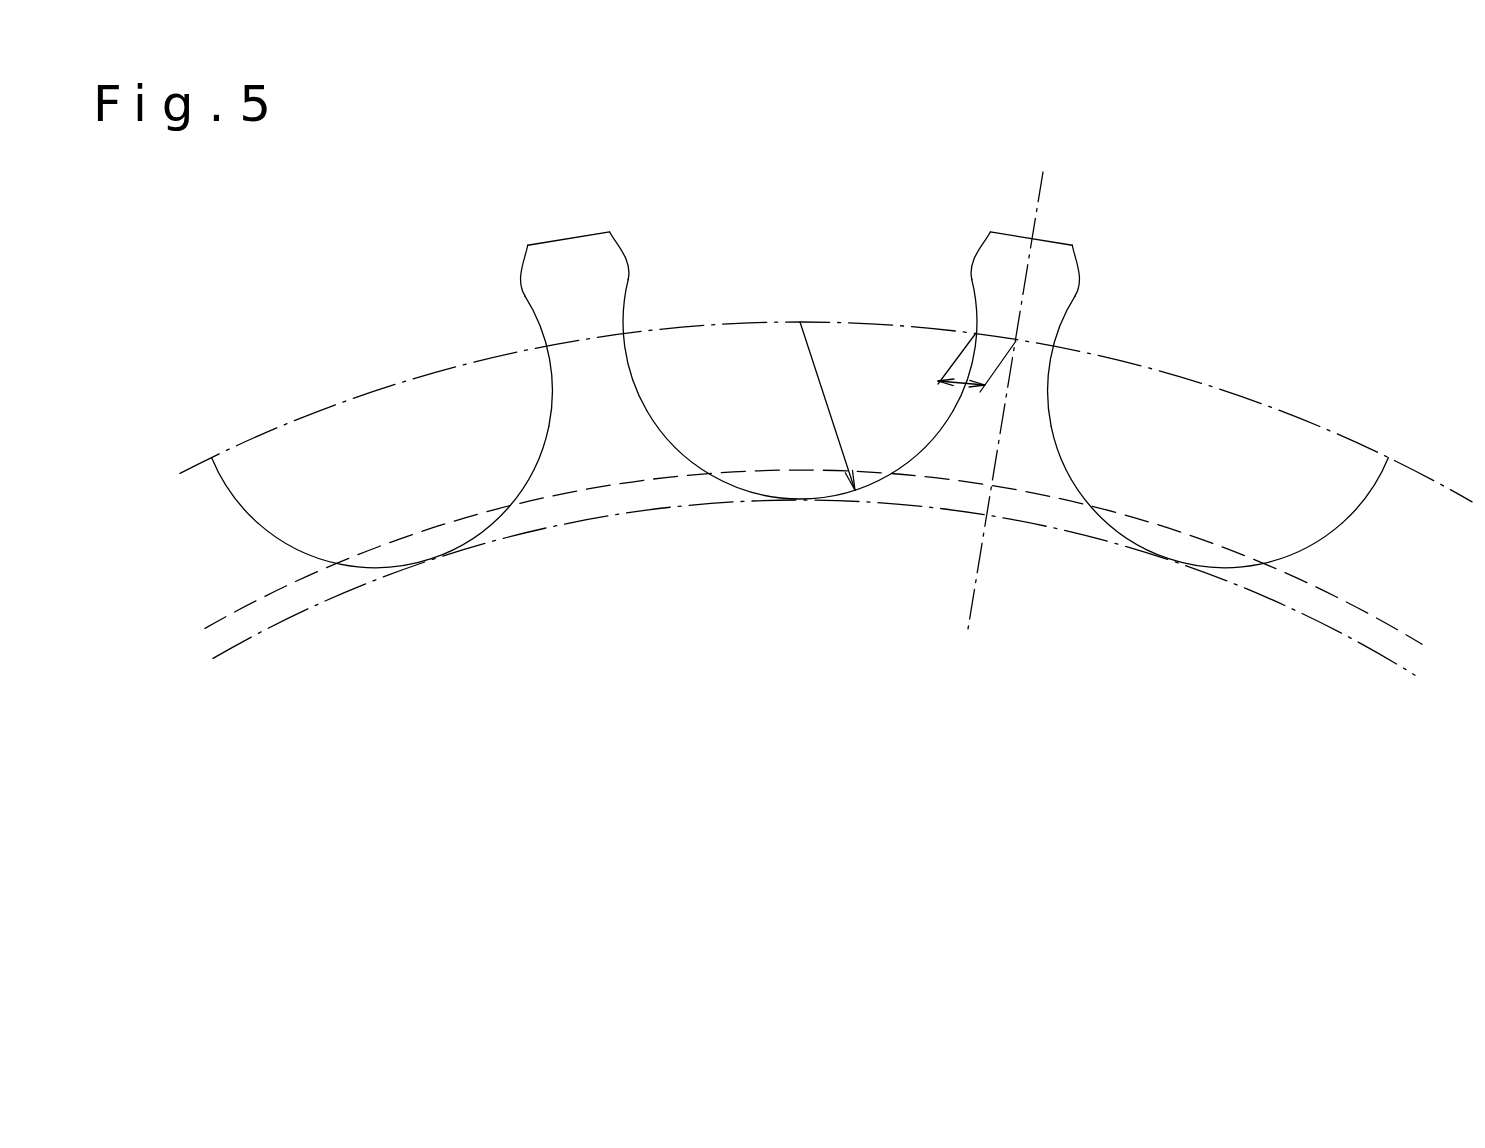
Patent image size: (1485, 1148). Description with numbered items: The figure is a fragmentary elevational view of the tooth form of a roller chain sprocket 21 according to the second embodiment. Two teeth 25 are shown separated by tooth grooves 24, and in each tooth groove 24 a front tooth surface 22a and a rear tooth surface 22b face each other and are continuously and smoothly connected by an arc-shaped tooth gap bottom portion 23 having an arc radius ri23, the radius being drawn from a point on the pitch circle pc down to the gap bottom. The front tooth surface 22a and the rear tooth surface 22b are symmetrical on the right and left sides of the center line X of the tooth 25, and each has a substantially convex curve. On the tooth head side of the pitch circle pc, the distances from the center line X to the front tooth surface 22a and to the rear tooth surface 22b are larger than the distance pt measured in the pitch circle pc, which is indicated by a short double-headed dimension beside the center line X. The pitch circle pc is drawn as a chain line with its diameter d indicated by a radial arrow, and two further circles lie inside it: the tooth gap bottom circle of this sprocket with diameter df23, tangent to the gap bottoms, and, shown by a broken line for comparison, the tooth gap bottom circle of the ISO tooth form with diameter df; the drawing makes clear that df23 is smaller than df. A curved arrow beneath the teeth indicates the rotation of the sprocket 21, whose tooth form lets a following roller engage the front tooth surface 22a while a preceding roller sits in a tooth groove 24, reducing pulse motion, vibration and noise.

The sprocket 21 is at (826, 529).
The front tooth surface 22a is at (525, 294).
The rear tooth surface 22b is at (627, 277).
The tooth gap bottom portion 23 is at (385, 576).
The tooth groove 24 is at (300, 443).
The tooth 25 is at (573, 233).
The pitch circle pc is at (1301, 420).
The pitch circle diameter d is at (1232, 393).
The diameter of the tooth gap bottom circle in an ISO tooth form df is at (1043, 495).
The diameter of the tooth gap bottom circle df23 is at (1319, 622).
The arc radius of the tooth gap bottom portion ri23 is at (822, 396).
The distance in the pitch circle pt is at (953, 387).
The center line of the tooth X is at (1013, 389).